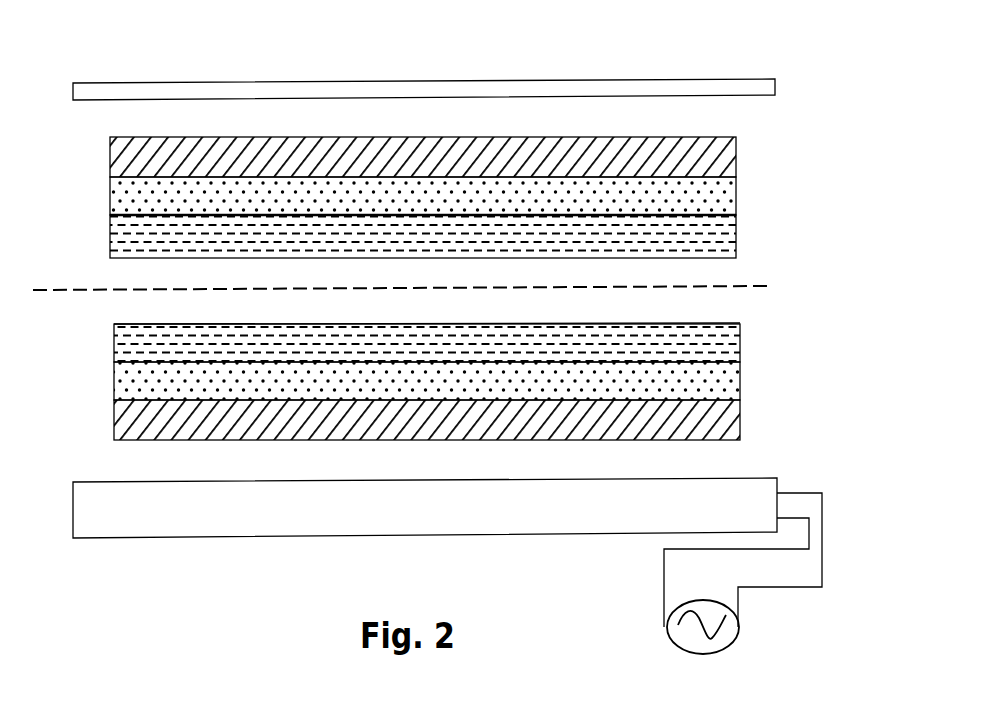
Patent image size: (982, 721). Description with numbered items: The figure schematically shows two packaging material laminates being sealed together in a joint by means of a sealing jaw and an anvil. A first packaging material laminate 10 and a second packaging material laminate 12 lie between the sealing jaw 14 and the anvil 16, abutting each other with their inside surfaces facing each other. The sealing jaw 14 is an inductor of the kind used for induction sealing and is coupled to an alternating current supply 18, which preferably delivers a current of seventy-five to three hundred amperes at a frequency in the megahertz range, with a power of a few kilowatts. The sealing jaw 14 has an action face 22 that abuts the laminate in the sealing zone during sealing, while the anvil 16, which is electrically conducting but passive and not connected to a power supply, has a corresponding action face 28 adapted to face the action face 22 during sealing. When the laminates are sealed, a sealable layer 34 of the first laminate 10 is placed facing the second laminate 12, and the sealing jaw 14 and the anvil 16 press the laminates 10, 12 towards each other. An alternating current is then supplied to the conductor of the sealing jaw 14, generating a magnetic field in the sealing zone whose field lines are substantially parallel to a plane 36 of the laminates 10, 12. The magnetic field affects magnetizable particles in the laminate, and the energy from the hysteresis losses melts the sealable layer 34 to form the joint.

The first packaging material laminate 10 is at (742, 382).
The second packaging material laminate 12 is at (740, 201).
The sealing jaw 14 is at (241, 533).
The anvil 16 is at (313, 81).
The alternating current supply 18 is at (740, 630).
The action face 22 is at (118, 481).
The action face 28 is at (108, 101).
The sealable layer 34 is at (722, 323).
The plane of the laminates 36 is at (104, 290).